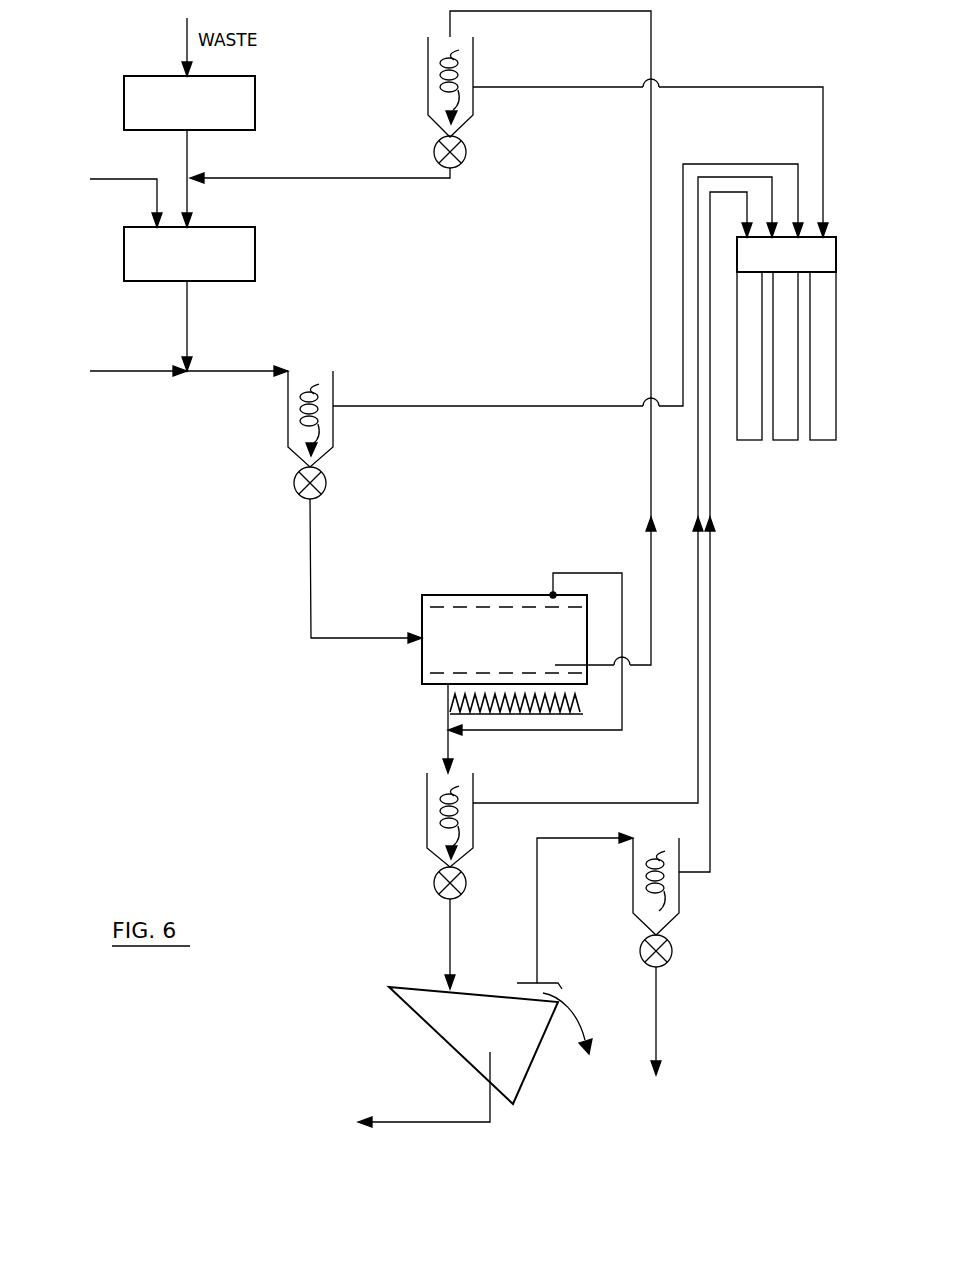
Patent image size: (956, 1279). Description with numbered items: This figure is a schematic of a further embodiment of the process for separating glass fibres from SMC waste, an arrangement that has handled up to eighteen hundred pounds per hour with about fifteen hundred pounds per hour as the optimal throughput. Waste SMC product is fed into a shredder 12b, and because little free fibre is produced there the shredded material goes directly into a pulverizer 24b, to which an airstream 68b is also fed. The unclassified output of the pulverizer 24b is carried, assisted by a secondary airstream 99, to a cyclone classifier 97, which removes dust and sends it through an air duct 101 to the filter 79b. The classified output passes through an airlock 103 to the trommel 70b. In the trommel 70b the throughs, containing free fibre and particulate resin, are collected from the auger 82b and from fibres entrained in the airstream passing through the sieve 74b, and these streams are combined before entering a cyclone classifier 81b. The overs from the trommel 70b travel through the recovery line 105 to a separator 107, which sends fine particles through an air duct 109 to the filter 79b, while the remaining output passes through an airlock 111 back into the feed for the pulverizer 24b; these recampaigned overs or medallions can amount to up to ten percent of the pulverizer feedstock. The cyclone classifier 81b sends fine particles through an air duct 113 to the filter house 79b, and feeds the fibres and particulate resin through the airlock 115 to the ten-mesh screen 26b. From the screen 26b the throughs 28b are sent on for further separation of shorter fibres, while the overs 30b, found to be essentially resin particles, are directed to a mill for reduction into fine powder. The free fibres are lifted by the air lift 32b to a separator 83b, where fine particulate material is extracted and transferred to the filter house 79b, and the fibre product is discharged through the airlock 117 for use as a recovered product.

The shredder 12b is at (124, 81).
The airstream 68b is at (108, 186).
The pulverizer 24b is at (255, 250).
The secondary airstream 99 is at (140, 372).
The cyclone classifier 97 is at (288, 425).
The airlock 103 is at (297, 492).
The air duct 101 is at (433, 405).
The separator 107 is at (473, 107).
The airlock 111 is at (464, 165).
The recovery line 105 is at (651, 553).
The air duct 109 is at (718, 87).
The filter 79b is at (820, 466).
The trommel 70b is at (477, 583).
The sieve 74b is at (430, 607).
The auger 82b is at (533, 715).
The cyclone classifier 81b is at (427, 803).
The airlock 115 is at (436, 891).
The air duct 113 is at (577, 802).
The air lift 32b is at (520, 982).
The separator 83b is at (679, 905).
The airlock 117 is at (668, 962).
The 10-mesh screen 26b is at (415, 1012).
The throughs 28b is at (440, 1123).
The overs 30b is at (578, 1035).